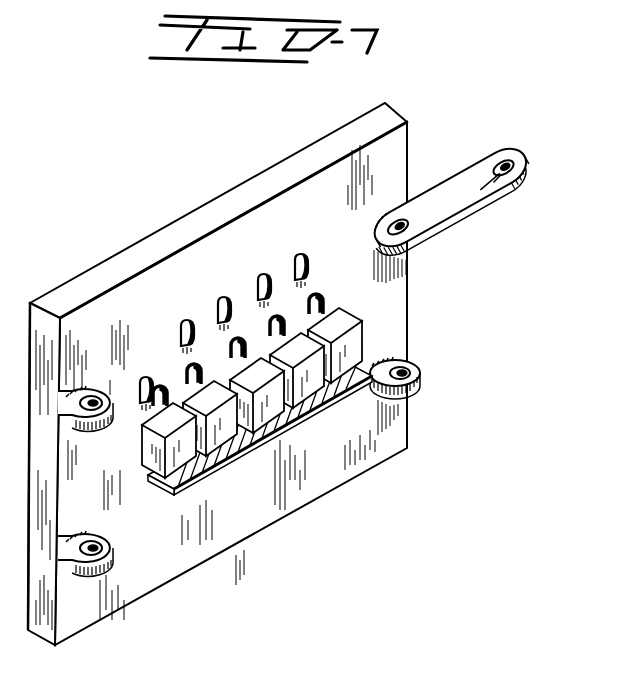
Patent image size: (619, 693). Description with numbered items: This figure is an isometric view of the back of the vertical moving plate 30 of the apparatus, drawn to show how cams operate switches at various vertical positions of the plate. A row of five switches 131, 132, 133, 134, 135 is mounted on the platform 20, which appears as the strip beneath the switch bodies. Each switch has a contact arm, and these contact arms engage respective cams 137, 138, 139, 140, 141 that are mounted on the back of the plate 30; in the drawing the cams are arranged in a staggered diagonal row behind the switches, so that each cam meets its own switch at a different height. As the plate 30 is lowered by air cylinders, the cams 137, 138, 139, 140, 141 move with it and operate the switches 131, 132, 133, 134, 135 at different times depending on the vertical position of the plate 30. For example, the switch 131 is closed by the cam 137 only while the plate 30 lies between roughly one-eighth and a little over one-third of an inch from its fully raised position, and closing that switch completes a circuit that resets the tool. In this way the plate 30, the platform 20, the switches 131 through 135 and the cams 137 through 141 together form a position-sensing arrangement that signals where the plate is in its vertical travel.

The plate 30 is at (405, 163).
The platform 20 is at (163, 497).
The switch 131 is at (150, 479).
The switch 132 is at (206, 480).
The switch 133 is at (255, 455).
The switch 134 is at (309, 404).
The switch 135 is at (363, 352).
The cam 137 is at (139, 388).
The cam 138 is at (181, 332).
The cam 139 is at (220, 300).
The cam 140 is at (263, 277).
The cam 141 is at (299, 257).